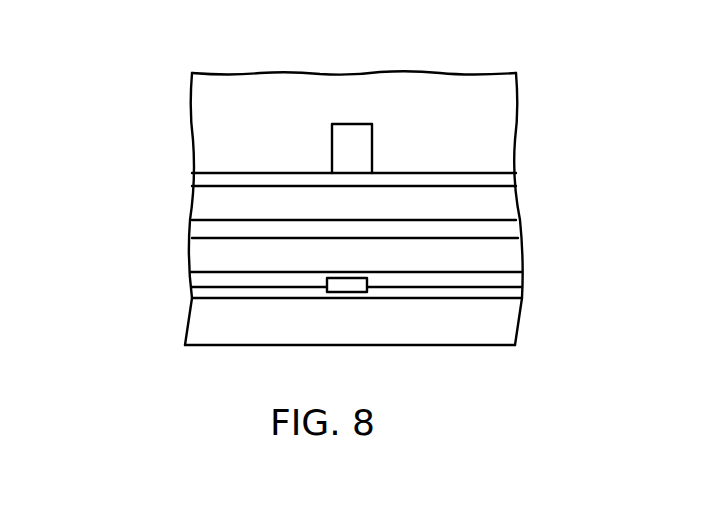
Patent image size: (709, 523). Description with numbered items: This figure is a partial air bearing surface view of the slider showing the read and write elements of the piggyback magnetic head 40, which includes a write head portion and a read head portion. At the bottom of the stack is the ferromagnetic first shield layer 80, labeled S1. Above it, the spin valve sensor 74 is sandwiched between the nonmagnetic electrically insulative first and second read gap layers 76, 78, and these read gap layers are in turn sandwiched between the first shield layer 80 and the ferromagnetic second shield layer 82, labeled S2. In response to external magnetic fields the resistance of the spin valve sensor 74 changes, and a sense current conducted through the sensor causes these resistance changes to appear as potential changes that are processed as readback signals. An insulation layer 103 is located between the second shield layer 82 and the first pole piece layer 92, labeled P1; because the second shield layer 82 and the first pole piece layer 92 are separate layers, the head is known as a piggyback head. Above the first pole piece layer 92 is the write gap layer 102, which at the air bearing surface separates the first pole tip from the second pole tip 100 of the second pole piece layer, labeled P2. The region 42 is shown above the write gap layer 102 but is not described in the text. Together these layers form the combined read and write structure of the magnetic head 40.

The piggyback magnetic head 40 is at (556, 80).
The overcoat/substrate layer 42 is at (200, 100).
The write gap layer 102 is at (283, 178).
The second pole tip 100 is at (357, 133).
The first pole piece layer 92 is at (197, 201).
The insulation layer 103 is at (487, 228).
The second shield layer 82 is at (197, 255).
The first read gap layer 76 is at (225, 300).
The spin valve sensor 74 is at (350, 292).
The second read gap layer 78 is at (477, 280).
The first shield layer 80 is at (497, 323).